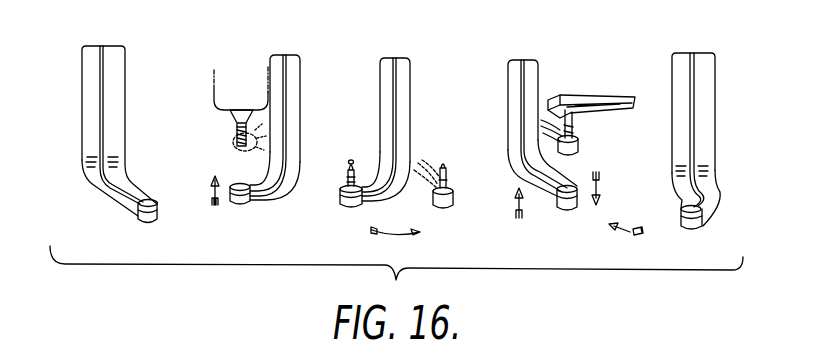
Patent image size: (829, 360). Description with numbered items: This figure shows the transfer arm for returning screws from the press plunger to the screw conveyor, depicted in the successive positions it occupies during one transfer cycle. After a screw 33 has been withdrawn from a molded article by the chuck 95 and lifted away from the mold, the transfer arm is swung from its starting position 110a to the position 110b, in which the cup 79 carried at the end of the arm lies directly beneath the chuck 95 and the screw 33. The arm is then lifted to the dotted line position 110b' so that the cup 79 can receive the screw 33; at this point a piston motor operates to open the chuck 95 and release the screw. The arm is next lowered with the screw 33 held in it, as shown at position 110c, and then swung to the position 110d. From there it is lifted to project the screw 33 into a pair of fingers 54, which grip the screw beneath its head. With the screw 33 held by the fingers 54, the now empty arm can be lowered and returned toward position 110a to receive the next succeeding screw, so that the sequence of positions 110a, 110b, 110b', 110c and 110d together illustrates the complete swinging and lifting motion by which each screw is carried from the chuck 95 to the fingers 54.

The transfer arm position 110a is at (82, 137).
The transfer arm position 110b is at (300, 127).
The transfer arm dotted line position 110b' is at (231, 146).
The transfer arm position 110c is at (386, 194).
The transfer arm position 110d is at (520, 176).
The chuck 95 is at (230, 93).
The screw 33 is at (237, 138).
The cup 79 is at (228, 191).
The fingers 54 is at (588, 96).